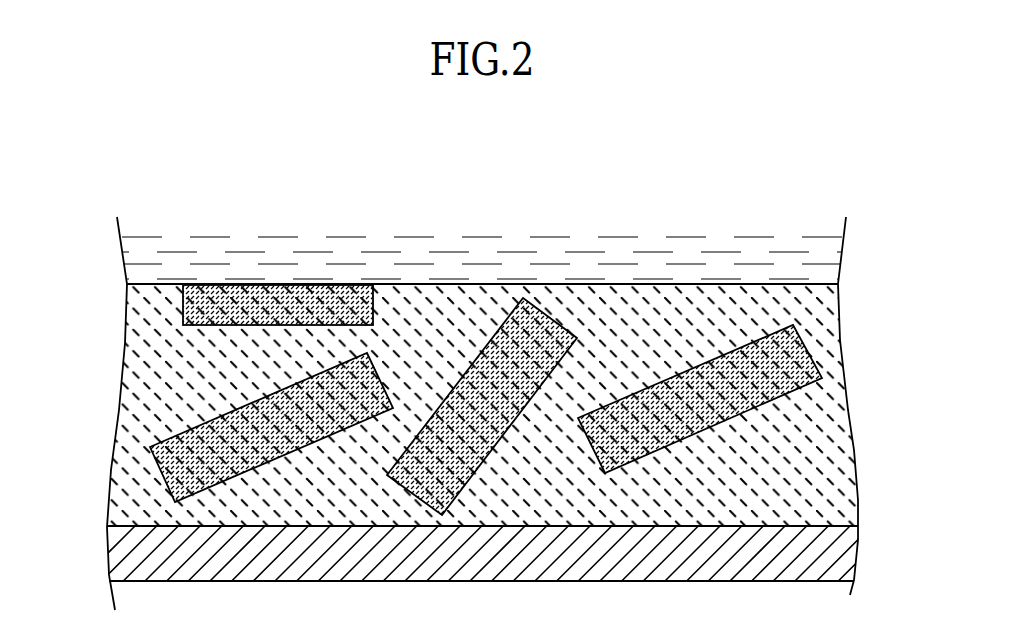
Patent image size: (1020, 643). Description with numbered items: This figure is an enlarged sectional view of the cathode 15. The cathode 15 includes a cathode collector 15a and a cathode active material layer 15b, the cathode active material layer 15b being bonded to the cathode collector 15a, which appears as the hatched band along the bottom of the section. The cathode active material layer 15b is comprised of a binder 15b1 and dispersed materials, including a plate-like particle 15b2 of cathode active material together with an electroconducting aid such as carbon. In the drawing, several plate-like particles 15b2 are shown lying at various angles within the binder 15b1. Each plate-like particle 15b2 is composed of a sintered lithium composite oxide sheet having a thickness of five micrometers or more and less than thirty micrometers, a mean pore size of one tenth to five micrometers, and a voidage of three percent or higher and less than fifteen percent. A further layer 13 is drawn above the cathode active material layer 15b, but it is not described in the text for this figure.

The adhesive layer 13 is at (828, 242).
The cathode 15 is at (485, 413).
The cathode collector 15a is at (110, 560).
The cathode active material layer 15b is at (456, 377).
The binder 15b1 is at (664, 300).
The plate-like particle of cathode active material 15b2 is at (273, 292).